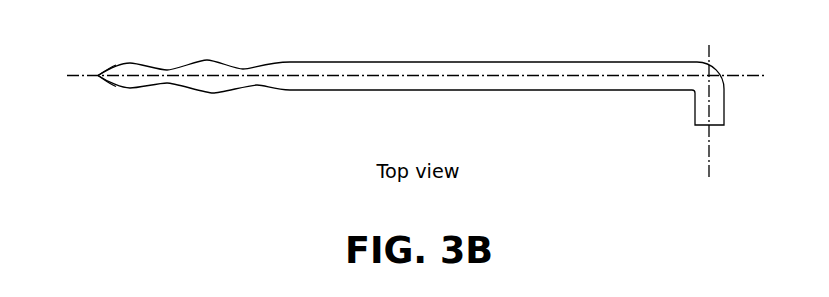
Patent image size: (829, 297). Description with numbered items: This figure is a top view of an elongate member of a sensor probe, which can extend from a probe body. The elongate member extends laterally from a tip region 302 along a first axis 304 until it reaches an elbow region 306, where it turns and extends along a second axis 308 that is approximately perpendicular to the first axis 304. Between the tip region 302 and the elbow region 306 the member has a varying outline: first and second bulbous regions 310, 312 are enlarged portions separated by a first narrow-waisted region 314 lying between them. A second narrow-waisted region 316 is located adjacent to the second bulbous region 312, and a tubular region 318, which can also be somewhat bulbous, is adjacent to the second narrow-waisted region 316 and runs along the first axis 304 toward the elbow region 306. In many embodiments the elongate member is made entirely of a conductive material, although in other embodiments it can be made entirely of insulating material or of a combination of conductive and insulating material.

The tip region 302 is at (98, 76).
The first axis 304 is at (81, 80).
The elbow region 306 is at (720, 67).
The second axis 308 is at (712, 160).
The first bulbous region 310 is at (135, 70).
The second bulbous region 312 is at (218, 70).
The first narrow-waisted region 314 is at (172, 80).
The second narrow-waisted region 316 is at (262, 83).
The tubular region 318 is at (323, 88).